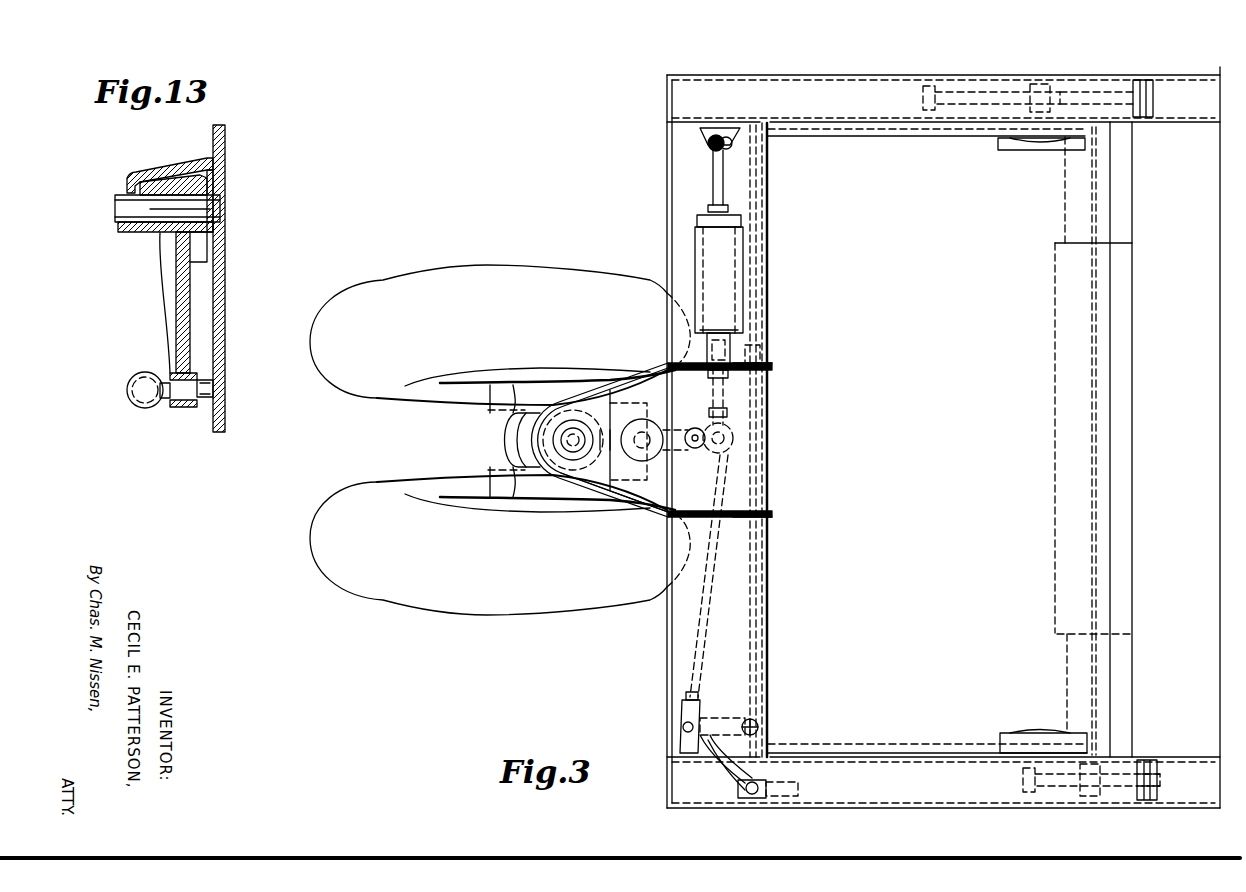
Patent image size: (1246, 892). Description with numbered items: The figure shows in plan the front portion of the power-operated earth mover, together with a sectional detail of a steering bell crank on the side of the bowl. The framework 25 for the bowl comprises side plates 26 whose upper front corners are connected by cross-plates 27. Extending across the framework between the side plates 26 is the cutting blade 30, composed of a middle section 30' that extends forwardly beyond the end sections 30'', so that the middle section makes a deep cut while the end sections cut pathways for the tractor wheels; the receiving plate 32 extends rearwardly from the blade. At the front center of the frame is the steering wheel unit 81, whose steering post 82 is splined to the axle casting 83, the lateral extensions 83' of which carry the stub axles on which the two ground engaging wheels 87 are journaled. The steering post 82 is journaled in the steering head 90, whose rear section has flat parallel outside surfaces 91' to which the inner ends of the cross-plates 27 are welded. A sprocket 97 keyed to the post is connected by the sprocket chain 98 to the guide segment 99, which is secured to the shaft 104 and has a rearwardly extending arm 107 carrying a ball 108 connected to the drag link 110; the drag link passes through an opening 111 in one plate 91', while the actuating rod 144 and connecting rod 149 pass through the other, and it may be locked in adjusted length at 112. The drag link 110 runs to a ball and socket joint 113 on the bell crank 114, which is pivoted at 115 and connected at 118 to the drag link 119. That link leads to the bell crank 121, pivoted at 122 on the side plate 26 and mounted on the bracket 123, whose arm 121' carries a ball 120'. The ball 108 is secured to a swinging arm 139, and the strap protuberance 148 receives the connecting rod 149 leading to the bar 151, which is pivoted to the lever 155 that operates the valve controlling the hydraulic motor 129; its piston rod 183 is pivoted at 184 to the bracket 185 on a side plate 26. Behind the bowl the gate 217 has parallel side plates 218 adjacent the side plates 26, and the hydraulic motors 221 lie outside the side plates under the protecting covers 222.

In FIG. 3, the framework 25 is at (654, 175).
In FIG. 13, the side plates 26 is at (228, 280).
In FIG. 3, the side plates 26 is at (789, 120).
In FIG. 3, the cross-plates 27 is at (739, 441).
In FIG. 3, the cutting blade 30 is at (1020, 385).
In FIG. 3, the middle section of cutting blade 30' is at (1058, 584).
In FIG. 3, the end sections of cutting blade 30'' is at (1027, 683).
In FIG. 3, the receiving plate 32 is at (1136, 439).
In FIG. 3, the steering wheel unit 81 is at (337, 456).
In FIG. 3, the steering post 82 is at (567, 430).
In FIG. 3, the axle casting 83 is at (480, 440).
In FIG. 3, the lateral extensions 83' is at (476, 438).
In FIG. 3, the ground engaging wheels 87 is at (443, 282).
In FIG. 3, the steering head 90 is at (607, 508).
In FIG. 3, the flat parallel outside surfaces 91' is at (785, 452).
In FIG. 3, the sprocket 97 is at (578, 425).
In FIG. 3, the sprocket chain 98 is at (600, 395).
In FIG. 3, the guide segment 99 is at (625, 420).
In FIG. 3, the shaft 104 is at (615, 477).
In FIG. 3, the rearwardly extending arm 107 is at (672, 428).
In FIG. 3, the ball 108 is at (720, 455).
In FIG. 3, the drag link 110 is at (696, 610).
In FIG. 3, the opening 111 is at (686, 366).
In FIG. 3, the lock 112 is at (686, 696).
In FIG. 3, the ball and socket joint 113 is at (682, 725).
In FIG. 3, the bell crank 114 is at (706, 745).
In FIG. 3, the pivot 115 is at (748, 718).
In FIG. 3, the connection 118 is at (751, 795).
In FIG. 3, the drag link 119 is at (786, 797).
In FIG. 13, the ball 120' is at (158, 415).
In FIG. 13, the bell crank 121 is at (176, 182).
In FIG. 13, the arm 121' is at (156, 302).
In FIG. 13, the pivot 122 is at (133, 212).
In FIG. 13, the bracket 123 is at (160, 168).
In FIG. 3, the hydraulic motor 129 is at (730, 268).
In FIG. 3, the swinging arm 139 is at (695, 450).
In FIG. 3, the actuating rod 144 is at (725, 398).
In FIG. 3, the protuberance 148 is at (726, 415).
In FIG. 3, the connecting rod 149 is at (727, 383).
In FIG. 3, the bar 151 is at (757, 338).
In FIG. 3, the lever 155 is at (718, 330).
In FIG. 3, the piston rod 183 is at (725, 183).
In FIG. 3, the pivot 184 is at (708, 149).
In FIG. 3, the bracket 185 is at (736, 140).
In FIG. 3, the gate 217 is at (773, 462).
In FIG. 3, the gate side plates 218 is at (866, 137).
In FIG. 3, the hydraulic motors 221 is at (1190, 108).
In FIG. 3, the protecting covers 222 is at (895, 92).